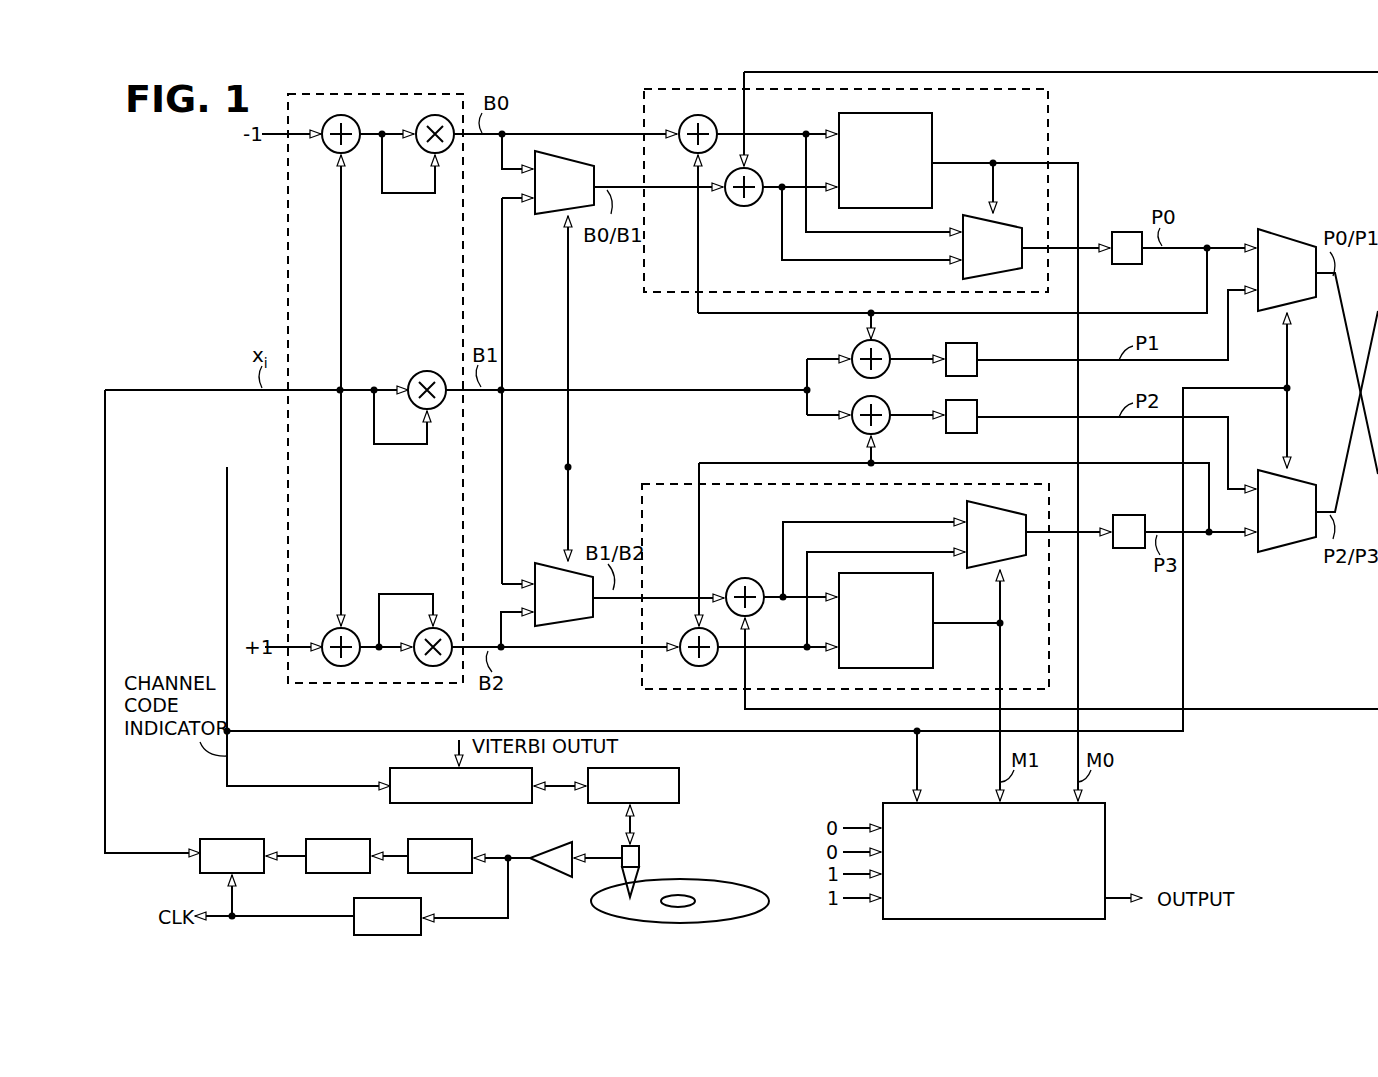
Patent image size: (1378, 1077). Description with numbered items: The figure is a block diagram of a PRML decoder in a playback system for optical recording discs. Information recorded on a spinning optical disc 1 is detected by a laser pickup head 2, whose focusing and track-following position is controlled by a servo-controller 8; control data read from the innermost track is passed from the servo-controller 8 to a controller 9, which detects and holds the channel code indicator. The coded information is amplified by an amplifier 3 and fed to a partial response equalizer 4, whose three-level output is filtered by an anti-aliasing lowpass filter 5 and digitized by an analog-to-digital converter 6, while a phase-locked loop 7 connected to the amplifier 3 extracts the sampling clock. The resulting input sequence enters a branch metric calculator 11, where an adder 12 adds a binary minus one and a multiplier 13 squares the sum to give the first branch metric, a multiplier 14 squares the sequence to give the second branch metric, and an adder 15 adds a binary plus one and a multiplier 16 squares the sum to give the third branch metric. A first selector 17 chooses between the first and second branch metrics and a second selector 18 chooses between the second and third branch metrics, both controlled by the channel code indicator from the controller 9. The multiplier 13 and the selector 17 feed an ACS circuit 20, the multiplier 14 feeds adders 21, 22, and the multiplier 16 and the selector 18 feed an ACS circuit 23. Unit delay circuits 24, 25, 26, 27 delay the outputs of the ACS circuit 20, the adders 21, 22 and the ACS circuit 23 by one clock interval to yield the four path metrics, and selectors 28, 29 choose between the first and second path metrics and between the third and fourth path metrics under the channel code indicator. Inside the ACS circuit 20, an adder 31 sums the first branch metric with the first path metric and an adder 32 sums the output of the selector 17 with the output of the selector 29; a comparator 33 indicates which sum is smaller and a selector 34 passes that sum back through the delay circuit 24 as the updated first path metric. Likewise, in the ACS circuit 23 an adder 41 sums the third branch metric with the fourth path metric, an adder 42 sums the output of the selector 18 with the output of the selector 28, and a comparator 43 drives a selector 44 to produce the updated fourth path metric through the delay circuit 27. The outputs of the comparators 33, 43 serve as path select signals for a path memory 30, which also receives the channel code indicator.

The optical disc 1 is at (694, 879).
The laser pickup head 2 is at (639, 858).
The amplifier 3 is at (548, 872).
The partial response equalizer 4 is at (447, 826).
The anti-aliasing lowpass filter 5 is at (338, 839).
The analog-to-digital converter 6 is at (228, 839).
The phase-locked loop 7 is at (382, 898).
The servo-controller 8 is at (679, 786).
The controller 9 is at (390, 780).
The branch metric calculator 11 is at (288, 283).
The adder 12 is at (341, 114).
The multiplier 13 is at (435, 114).
The multiplier 14 is at (427, 371).
The adder 15 is at (343, 667).
The multiplier 16 is at (435, 667).
The first selector 17 is at (541, 214).
The second selector 18 is at (542, 563).
The ACS circuit 20 is at (665, 293).
The adder 21 is at (885, 350).
The adder 22 is at (885, 406).
The ACS circuit 23 is at (658, 484).
The unit delay circuit 24 is at (1115, 232).
The unit delay circuit 25 is at (977, 351).
The unit delay circuit 26 is at (977, 408).
The unit delay circuit 27 is at (1118, 515).
The selector 28 is at (1280, 235).
The selector 29 is at (1285, 552).
The path memory 30 is at (1105, 858).
The adder 31 is at (686, 150).
The adder 32 is at (746, 206).
The comparator 33 is at (932, 143).
The selector 34 is at (1010, 226).
The adder 41 is at (684, 636).
The adder 42 is at (745, 578).
The comparator 43 is at (933, 607).
The selector 44 is at (1017, 560).